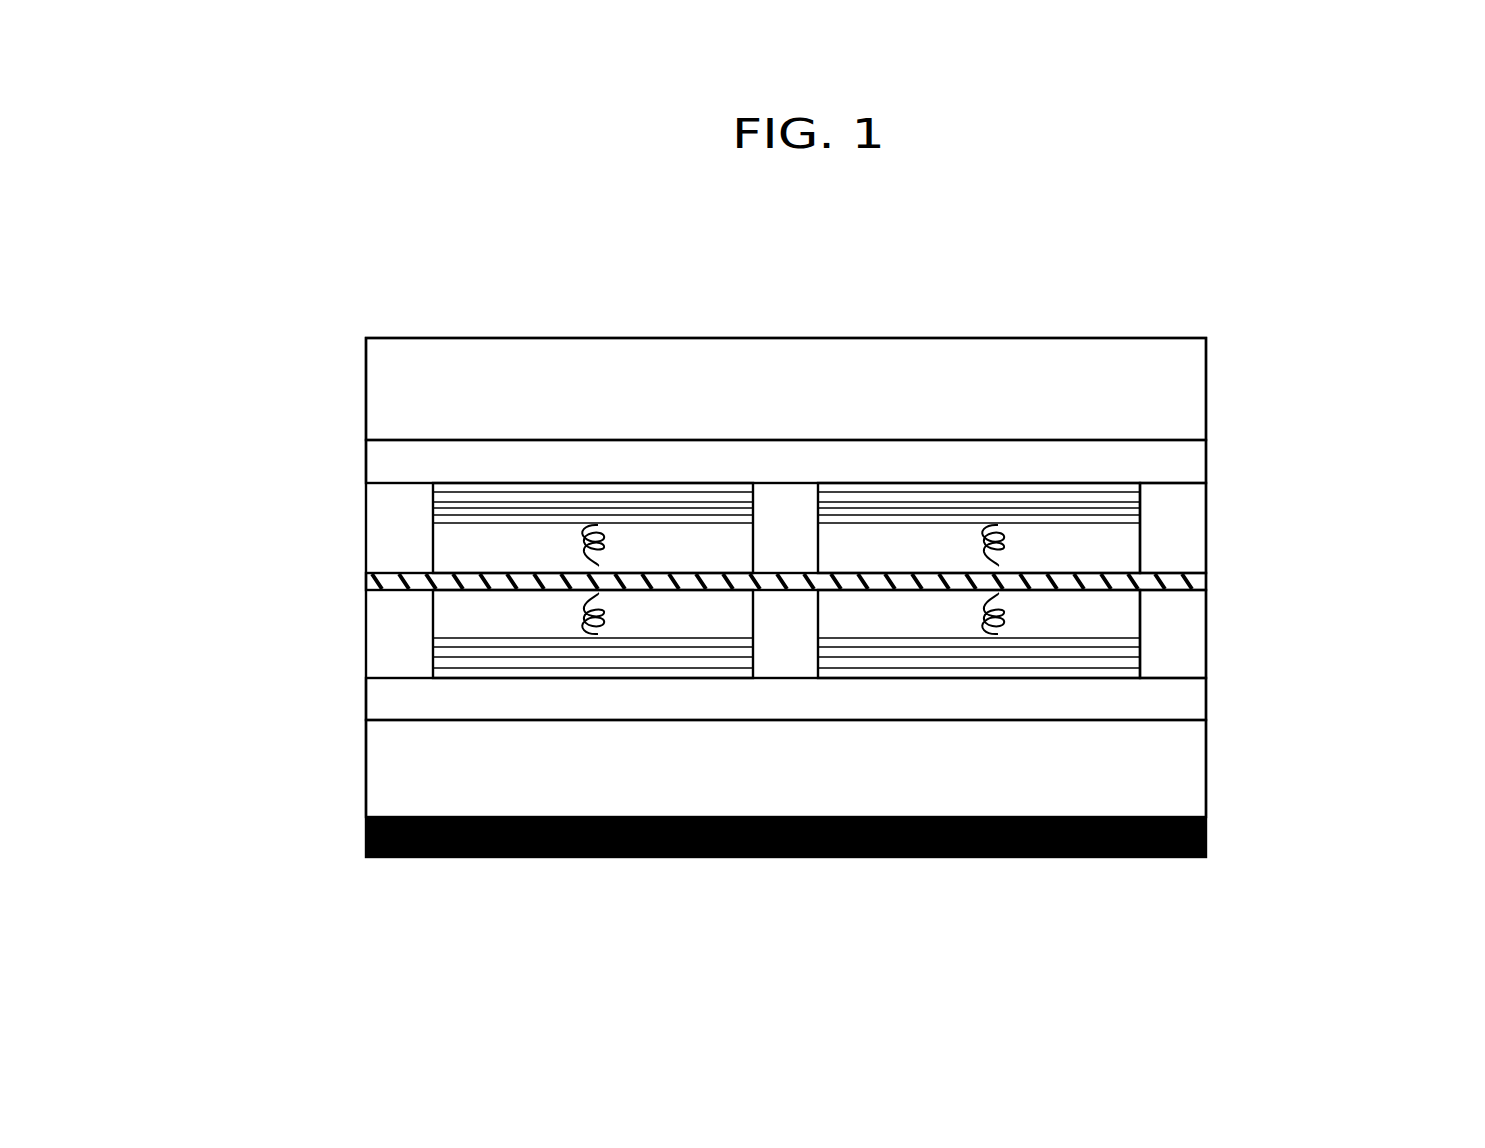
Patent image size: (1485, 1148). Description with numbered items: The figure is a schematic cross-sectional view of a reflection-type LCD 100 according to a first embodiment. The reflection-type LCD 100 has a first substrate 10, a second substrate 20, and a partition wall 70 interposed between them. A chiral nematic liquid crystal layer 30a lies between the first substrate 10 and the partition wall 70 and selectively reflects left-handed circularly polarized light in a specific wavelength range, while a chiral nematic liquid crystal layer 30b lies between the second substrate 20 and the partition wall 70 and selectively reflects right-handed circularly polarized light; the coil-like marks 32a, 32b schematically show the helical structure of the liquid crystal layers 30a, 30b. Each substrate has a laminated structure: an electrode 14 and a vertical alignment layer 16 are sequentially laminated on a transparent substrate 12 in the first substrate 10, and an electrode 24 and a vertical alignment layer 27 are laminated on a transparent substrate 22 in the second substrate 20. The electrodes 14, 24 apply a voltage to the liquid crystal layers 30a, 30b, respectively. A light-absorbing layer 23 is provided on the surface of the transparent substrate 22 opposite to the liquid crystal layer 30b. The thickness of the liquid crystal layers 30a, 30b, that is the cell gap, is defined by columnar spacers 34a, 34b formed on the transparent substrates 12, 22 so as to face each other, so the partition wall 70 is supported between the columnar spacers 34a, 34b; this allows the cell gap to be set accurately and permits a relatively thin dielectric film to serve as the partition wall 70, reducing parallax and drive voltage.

The reflection-type LCD 100 is at (1120, 300).
The first substrate 10 is at (1387, 307).
The transparent substrate 12 is at (1168, 360).
The electrode 14 is at (1170, 455).
The vertical alignment layer 16 is at (1100, 507).
The columnar spacer 34a is at (1172, 515).
The chiral nematic liquid crystal layer 30a is at (465, 550).
The helical structure 32a is at (578, 542).
The partition wall 70 is at (367, 577).
The second substrate 20 is at (1387, 573).
The vertical alignment layer 27 is at (1100, 632).
The columnar spacer 34b is at (1158, 640).
The chiral nematic liquid crystal layer 30b is at (465, 610).
The helical structure 32b is at (578, 625).
The electrode 24 is at (1157, 697).
The transparent substrate 22 is at (1157, 790).
The light-absorbing layer 23 is at (1207, 843).